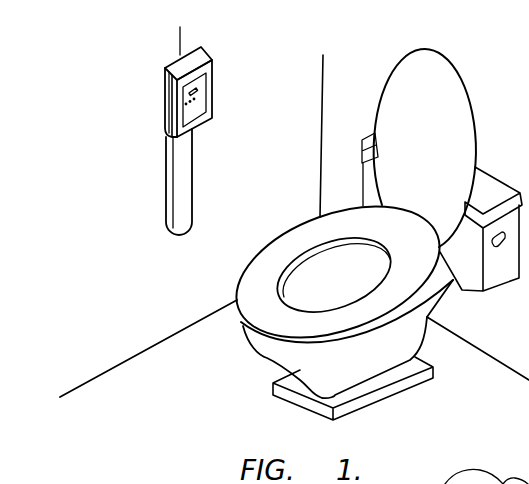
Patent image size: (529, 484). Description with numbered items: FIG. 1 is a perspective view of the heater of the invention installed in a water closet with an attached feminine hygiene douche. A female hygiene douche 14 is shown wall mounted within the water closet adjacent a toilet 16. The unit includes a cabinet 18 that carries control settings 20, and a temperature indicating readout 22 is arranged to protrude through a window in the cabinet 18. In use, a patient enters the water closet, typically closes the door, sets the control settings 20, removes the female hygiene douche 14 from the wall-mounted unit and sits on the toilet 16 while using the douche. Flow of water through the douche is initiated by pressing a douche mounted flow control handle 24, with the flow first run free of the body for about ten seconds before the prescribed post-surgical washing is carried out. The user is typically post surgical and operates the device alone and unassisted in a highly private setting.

The female hygiene douche 14 is at (190, 92).
The toilet 16 is at (262, 356).
The cabinet 18 is at (200, 123).
The control settings 20 is at (203, 103).
The temperature indicating readout 22 is at (198, 88).
The flow control handle 24 is at (166, 106).